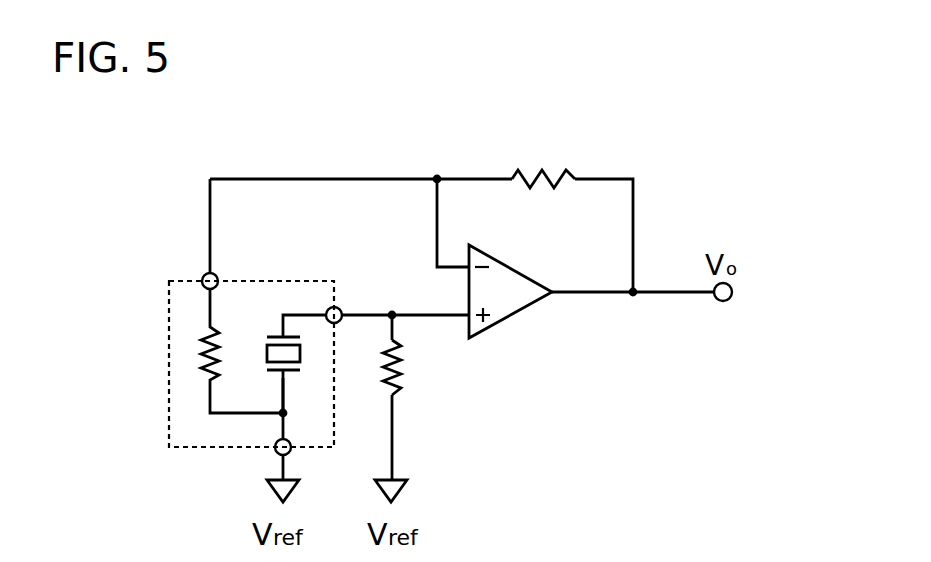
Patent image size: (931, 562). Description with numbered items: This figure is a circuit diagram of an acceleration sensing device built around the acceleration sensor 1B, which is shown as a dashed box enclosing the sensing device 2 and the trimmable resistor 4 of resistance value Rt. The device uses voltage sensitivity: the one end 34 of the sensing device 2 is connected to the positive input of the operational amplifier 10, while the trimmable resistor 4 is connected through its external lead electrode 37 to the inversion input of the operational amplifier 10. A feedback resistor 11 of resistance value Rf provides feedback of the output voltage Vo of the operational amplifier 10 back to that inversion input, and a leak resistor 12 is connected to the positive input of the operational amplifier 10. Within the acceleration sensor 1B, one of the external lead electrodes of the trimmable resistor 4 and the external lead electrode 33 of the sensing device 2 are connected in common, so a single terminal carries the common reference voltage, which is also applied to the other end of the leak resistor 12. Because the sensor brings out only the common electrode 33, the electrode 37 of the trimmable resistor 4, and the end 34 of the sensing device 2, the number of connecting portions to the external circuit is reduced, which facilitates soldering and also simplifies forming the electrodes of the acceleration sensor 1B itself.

The acceleration sensor 1B is at (169, 325).
The sensing device 2 is at (300, 353).
The trimmable resistor 4 is at (200, 357).
The operational amplifier 10 is at (510, 318).
The feedback resistor 11 is at (560, 180).
The leak resistor 12 is at (397, 362).
The external lead electrode 33 is at (289, 452).
The one end of sensing device 34 is at (339, 308).
The external lead electrode 37 is at (206, 279).